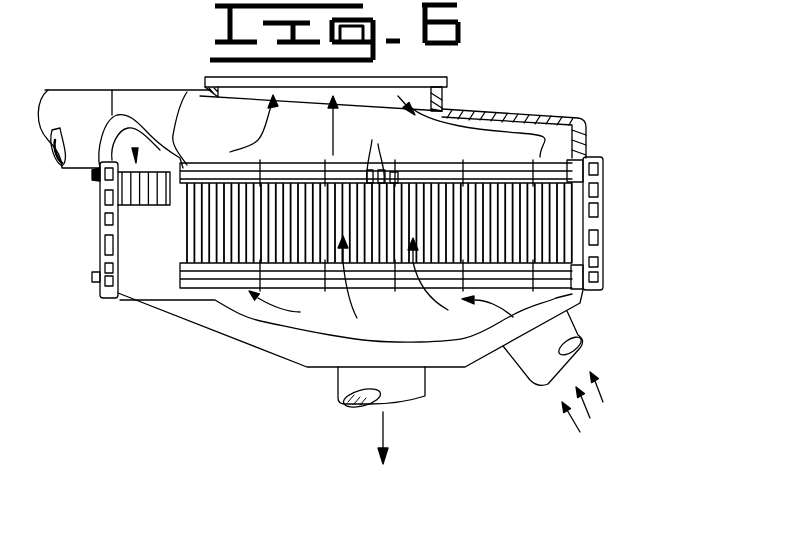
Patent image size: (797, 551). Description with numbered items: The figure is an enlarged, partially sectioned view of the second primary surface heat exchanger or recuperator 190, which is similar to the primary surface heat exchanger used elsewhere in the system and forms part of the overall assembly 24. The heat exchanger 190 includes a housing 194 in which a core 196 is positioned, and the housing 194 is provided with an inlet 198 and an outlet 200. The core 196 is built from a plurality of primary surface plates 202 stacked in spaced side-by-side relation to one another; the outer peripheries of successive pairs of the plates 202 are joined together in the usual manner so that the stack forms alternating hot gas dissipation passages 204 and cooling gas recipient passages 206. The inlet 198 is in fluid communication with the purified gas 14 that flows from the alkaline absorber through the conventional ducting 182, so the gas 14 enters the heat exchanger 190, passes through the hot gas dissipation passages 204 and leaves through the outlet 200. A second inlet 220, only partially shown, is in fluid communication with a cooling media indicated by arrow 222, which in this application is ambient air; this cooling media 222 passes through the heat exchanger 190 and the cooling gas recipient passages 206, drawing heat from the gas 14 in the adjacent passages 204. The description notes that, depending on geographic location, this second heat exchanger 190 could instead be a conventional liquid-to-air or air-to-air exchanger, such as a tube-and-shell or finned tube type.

The gas 14 is at (380, 440).
The heat exchanger assembly 24 is at (56, 370).
The conventional ducting 182 is at (92, 90).
The second primary surface heat exchanger 190 is at (122, 300).
The housing 194 is at (525, 118).
The core 196 is at (556, 212).
The inlet 198 is at (62, 143).
The outlet 200 is at (338, 396).
The primary surface plates 202 is at (381, 193).
The hot gas dissipation passages 204 is at (125, 130).
The cooling gas recipient passages 206 is at (400, 183).
The second inlet 220 is at (548, 385).
The cooling media 222 is at (333, 135).